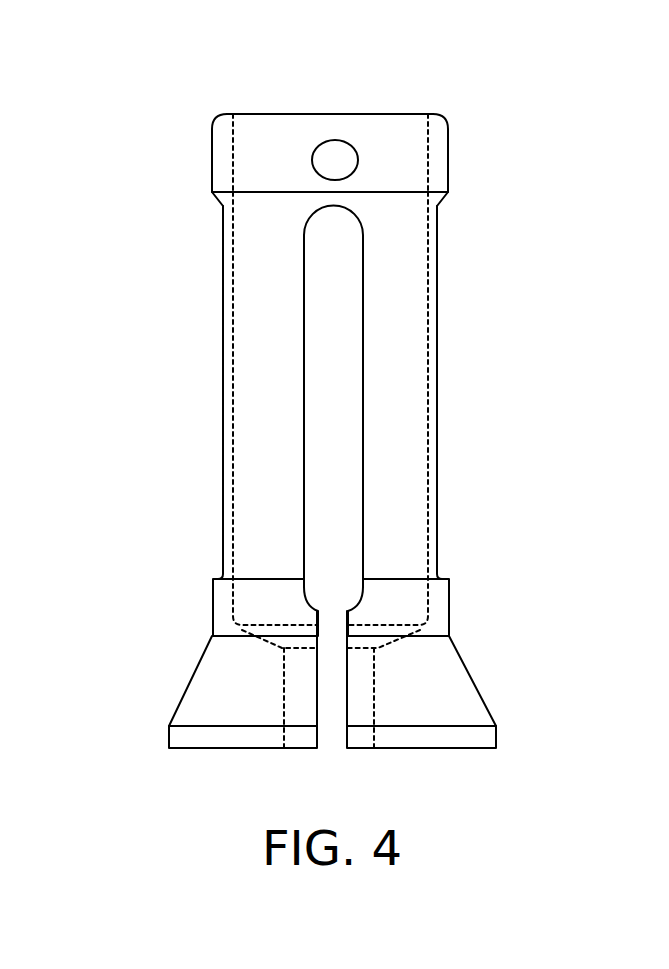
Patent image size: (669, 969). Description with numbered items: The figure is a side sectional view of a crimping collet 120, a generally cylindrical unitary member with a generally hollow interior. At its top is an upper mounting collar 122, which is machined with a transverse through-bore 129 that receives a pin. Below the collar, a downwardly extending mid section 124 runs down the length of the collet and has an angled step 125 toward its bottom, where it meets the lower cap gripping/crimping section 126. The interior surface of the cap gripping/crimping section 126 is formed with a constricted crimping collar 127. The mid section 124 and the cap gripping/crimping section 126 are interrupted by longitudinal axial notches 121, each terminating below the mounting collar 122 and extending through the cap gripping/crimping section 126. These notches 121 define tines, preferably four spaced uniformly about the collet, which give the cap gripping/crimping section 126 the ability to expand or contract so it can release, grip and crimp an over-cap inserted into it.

The crimping collet 120 is at (505, 80).
The longitudinal axial notches 121 is at (360, 476).
The upper mounting collar 122 is at (450, 128).
The downwardly extending mid section 124 is at (437, 363).
The angled step 125 is at (468, 673).
The lower cap gripping/crimping section 126 is at (493, 785).
The constricted crimping collar 127 is at (373, 665).
The transverse through-bore 129 is at (342, 152).